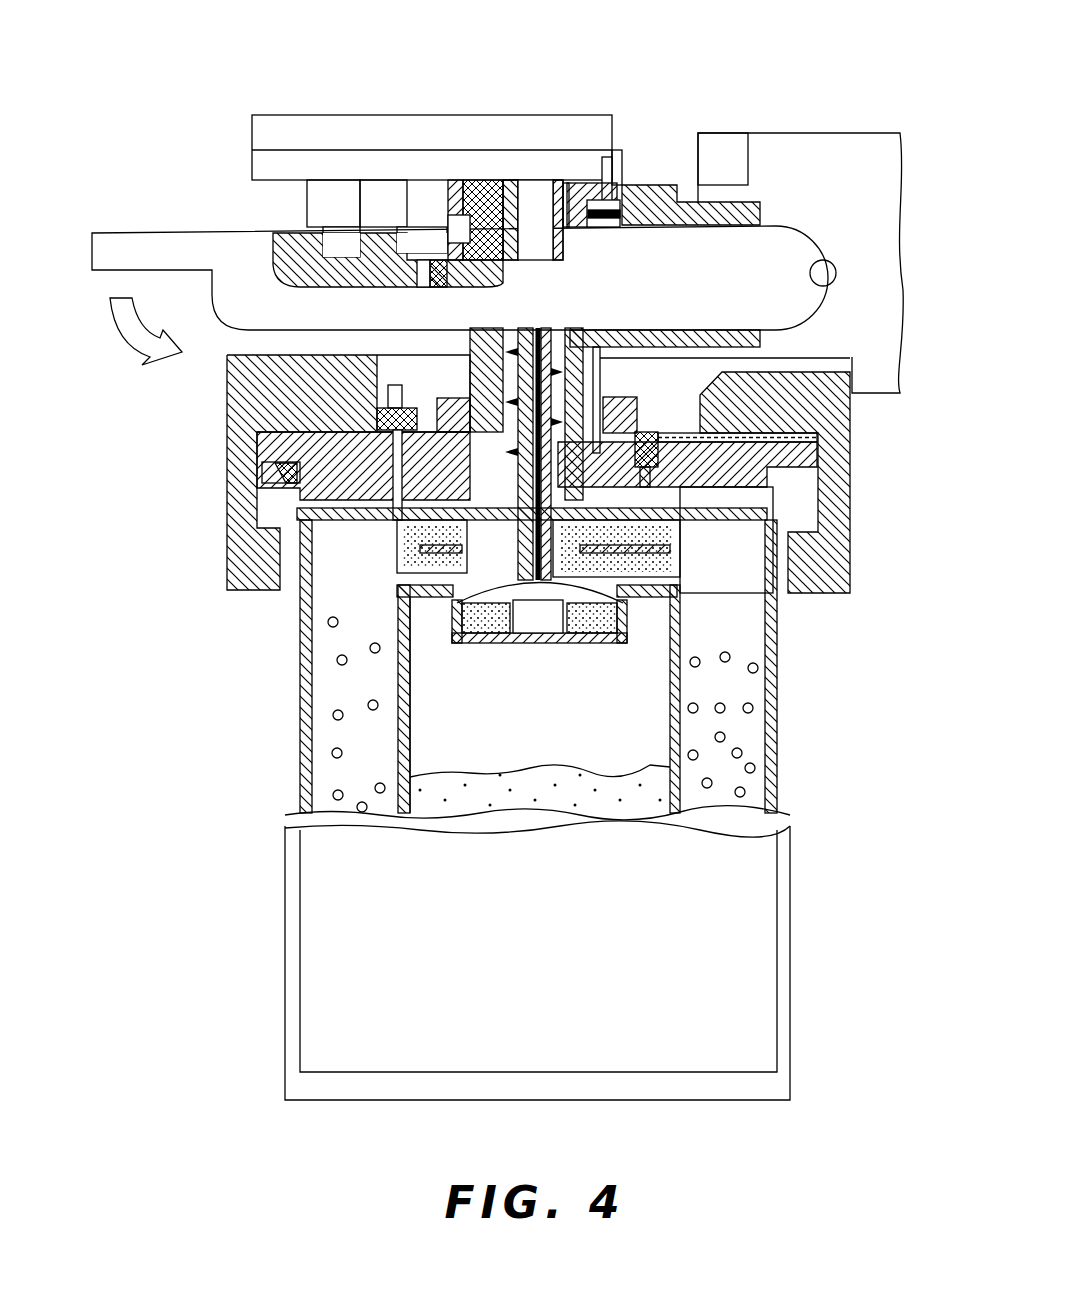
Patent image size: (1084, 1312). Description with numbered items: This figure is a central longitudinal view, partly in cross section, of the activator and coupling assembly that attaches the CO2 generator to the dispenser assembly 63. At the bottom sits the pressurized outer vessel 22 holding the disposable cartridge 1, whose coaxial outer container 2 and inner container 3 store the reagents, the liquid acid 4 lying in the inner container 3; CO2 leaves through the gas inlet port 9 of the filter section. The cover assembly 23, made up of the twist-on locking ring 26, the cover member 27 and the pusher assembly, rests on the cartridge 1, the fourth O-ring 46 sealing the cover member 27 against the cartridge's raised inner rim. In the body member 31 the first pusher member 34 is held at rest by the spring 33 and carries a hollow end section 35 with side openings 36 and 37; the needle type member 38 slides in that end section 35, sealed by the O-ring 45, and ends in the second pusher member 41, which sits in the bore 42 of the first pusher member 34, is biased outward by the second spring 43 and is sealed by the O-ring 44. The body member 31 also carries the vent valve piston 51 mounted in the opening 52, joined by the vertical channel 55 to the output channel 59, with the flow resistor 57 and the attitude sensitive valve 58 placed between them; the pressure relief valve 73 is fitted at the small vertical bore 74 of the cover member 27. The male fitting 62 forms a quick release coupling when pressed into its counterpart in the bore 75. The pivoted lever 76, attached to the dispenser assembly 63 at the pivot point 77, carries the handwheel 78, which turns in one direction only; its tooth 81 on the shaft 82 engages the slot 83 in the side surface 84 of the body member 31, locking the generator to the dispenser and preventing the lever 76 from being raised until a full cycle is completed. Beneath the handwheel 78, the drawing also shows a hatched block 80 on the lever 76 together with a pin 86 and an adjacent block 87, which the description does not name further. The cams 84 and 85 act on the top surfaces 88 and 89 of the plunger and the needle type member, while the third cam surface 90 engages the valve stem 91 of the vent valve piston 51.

The disposable cartridge 1 is at (766, 876).
The outer container 2 is at (770, 737).
The inner container 3 is at (424, 718).
The liquid acid 4 is at (558, 782).
The gas inlet port 9 is at (462, 628).
The pressurized outer vessel 22 is at (788, 940).
The cover assembly 23 is at (872, 448).
The twist-on locking ring 26 is at (848, 496).
The cover member 27 is at (297, 480).
The body member 31 is at (474, 366).
The spring 33 is at (497, 494).
The first pusher member 34 is at (556, 195).
The hollow end section 35 is at (627, 628).
The side opening 36 is at (538, 640).
The side opening 37 is at (457, 598).
The needle type member 38 is at (677, 600).
The second pusher member 41 is at (556, 222).
The bore 42 is at (440, 522).
The second spring 43 is at (532, 332).
The O-ring 44 is at (553, 242).
The O-ring 45 is at (480, 625).
The fourth O-ring 46 is at (680, 568).
The piston 51 is at (612, 220).
The opening 52 is at (620, 188).
The vertical channel 55 is at (600, 366).
The flow resistor 57 is at (648, 440).
The attitude sensitive valve 58 is at (660, 446).
The output channel 59 is at (642, 488).
The male fitting 62 is at (700, 203).
The dispenser assembly 63 is at (853, 160).
The pressure relief valve 73 is at (392, 404).
The small vertical bore 74 is at (300, 458).
The bore 75 is at (748, 202).
The pivoted lever 76 is at (132, 250).
The pivot point 77 is at (833, 266).
The handwheel 78 is at (373, 130).
The block 80 is at (450, 287).
The tooth 81 is at (412, 225).
The shaft 82 is at (470, 228).
The slot 83 is at (558, 195).
The cam 84 is at (318, 195).
The cam 85 is at (338, 235).
The pin 86 is at (415, 272).
The block 87 is at (372, 185).
The plunger member top surface 88 is at (512, 190).
The top surface 89 is at (566, 195).
The third cam surface 90 is at (625, 183).
The valve stem 91 is at (614, 170).